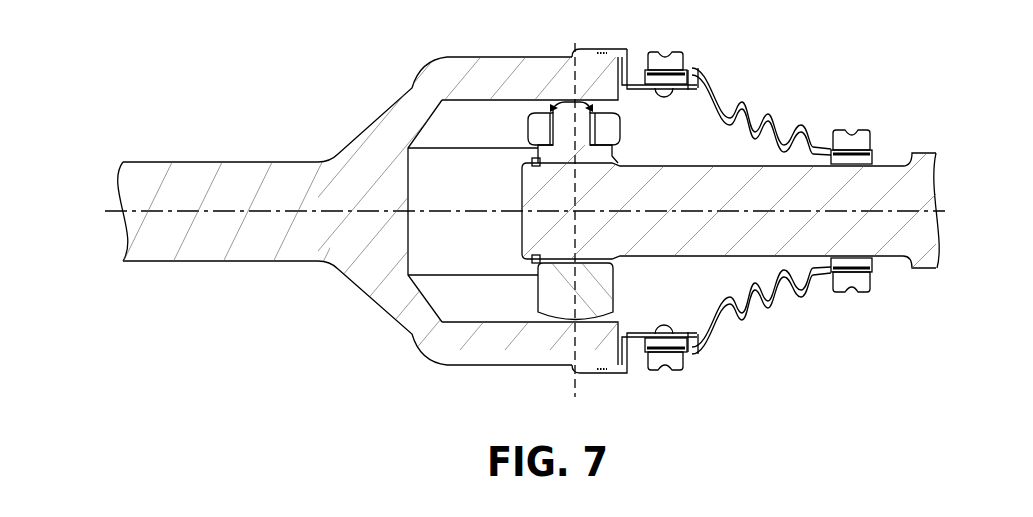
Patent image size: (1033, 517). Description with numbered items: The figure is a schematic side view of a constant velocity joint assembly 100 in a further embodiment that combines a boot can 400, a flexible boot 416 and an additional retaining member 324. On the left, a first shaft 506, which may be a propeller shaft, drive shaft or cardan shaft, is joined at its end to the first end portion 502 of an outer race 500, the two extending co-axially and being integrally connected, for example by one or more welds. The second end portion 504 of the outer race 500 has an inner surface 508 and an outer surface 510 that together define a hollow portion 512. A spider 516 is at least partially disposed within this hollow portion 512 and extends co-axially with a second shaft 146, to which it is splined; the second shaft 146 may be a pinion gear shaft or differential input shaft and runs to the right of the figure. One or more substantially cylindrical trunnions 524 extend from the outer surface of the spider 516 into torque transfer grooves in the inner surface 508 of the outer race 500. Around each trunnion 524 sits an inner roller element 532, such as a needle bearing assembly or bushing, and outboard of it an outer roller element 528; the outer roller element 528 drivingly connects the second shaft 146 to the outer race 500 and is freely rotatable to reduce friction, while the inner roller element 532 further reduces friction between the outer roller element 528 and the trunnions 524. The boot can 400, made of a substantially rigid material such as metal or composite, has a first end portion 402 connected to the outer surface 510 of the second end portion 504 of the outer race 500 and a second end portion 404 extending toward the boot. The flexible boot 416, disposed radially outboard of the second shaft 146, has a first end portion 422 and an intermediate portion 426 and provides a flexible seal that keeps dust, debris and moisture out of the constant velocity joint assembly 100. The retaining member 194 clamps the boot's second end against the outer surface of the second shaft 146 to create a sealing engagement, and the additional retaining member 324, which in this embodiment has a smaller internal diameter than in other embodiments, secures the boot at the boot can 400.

The constant velocity joint assembly 100 is at (321, 340).
The second shaft 146 is at (687, 198).
The retaining member 194 is at (872, 131).
The additional retaining member 324 is at (674, 52).
The boot can 400 is at (624, 75).
The first end portion 402 is at (582, 48).
The second end portion 404 is at (682, 95).
The flexible boot 416 is at (738, 323).
The first end portion 422 is at (706, 72).
The intermediate portion 426 is at (812, 130).
The outer race 500 is at (500, 209).
The first end portion 502 is at (366, 130).
The second end portion 504 is at (506, 57).
The first shaft 506 is at (252, 197).
The inner surface 508 is at (472, 325).
The outer surface 510 is at (493, 366).
The hollow portion 512 is at (455, 312).
The spider 516 is at (538, 293).
The trunnions 524 is at (583, 107).
The outer roller element 528 is at (530, 124).
The inner roller element 532 is at (543, 134).